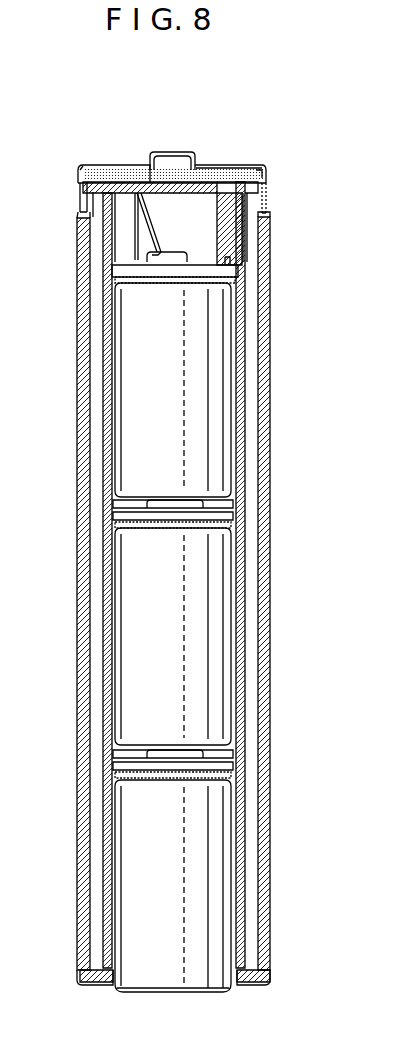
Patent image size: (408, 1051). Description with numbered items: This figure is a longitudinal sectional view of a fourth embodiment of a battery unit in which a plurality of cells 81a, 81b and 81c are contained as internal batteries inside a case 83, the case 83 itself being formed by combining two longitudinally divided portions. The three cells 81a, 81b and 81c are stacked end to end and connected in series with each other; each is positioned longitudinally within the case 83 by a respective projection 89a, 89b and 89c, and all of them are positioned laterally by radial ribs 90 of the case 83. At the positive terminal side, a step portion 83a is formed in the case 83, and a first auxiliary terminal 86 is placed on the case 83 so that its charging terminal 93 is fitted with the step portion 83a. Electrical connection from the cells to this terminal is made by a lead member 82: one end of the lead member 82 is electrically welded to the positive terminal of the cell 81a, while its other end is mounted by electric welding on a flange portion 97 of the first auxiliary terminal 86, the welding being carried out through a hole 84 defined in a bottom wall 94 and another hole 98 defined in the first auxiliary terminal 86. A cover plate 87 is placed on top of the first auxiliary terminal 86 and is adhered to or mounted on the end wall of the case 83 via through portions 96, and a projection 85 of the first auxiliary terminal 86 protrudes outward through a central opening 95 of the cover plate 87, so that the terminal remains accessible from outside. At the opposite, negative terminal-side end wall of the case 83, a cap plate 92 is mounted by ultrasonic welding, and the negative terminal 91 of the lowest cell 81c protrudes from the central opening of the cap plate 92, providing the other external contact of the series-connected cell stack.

The cell 81a is at (236, 386).
The cell 81b is at (236, 660).
The cell 81c is at (236, 855).
The lead member 82 is at (77, 243).
The case 83 is at (270, 243).
The step portion 83a is at (266, 199).
The hole 84 is at (80, 190).
The projection 85 is at (200, 167).
The first auxiliary terminal 86 is at (262, 172).
The cover plate 87 is at (101, 166).
The projection 89a is at (242, 280).
The projection 89b is at (248, 524).
The projection 89c is at (248, 772).
The radial ribs 90 is at (270, 214).
The negative terminal 91 is at (198, 992).
The cap plate 92 is at (252, 983).
The charging terminal 93 is at (266, 188).
The bottom wall 94 is at (174, 193).
The central opening 95 is at (150, 156).
The through portions 96 is at (228, 181).
The flange portion 97 is at (83, 165).
The hole 98 is at (133, 182).